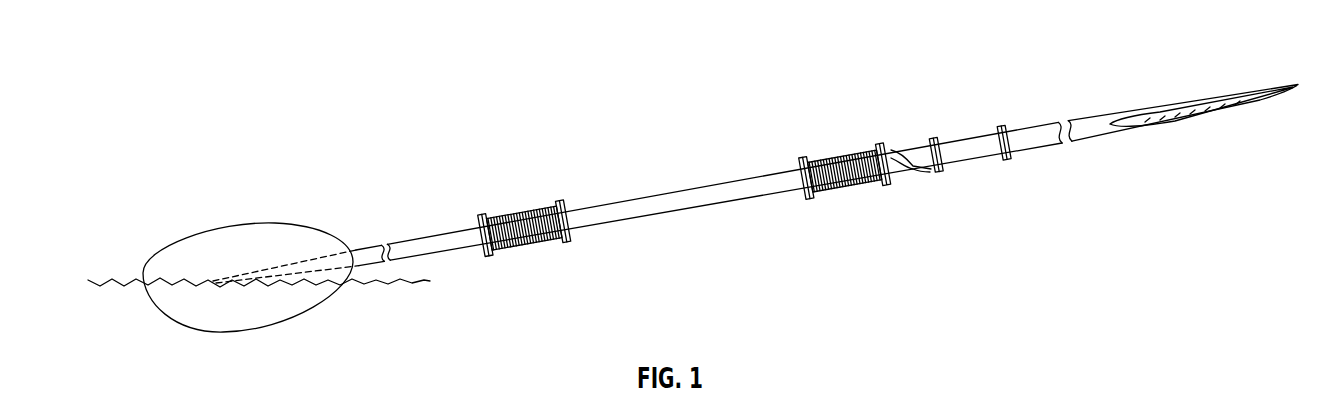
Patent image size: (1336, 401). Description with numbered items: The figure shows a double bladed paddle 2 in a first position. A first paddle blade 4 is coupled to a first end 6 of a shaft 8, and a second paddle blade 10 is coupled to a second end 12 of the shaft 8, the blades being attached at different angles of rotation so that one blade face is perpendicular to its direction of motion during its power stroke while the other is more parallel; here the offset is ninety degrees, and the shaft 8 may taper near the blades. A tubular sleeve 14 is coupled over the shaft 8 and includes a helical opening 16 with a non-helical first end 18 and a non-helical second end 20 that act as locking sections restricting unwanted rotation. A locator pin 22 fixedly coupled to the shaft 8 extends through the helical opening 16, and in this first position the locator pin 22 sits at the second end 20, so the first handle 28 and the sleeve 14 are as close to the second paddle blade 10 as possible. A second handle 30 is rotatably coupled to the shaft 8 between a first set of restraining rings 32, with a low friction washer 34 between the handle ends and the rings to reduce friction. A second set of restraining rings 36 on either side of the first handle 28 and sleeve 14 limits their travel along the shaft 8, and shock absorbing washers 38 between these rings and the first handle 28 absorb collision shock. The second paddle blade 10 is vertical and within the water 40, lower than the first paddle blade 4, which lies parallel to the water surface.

The paddle 2 is at (265, 99).
The first paddle blade 4 is at (1186, 107).
The first end 6 is at (1090, 118).
The shaft 8 is at (683, 196).
The second paddle blade 10 is at (253, 242).
The second end 12 is at (370, 250).
The sleeve 14 is at (923, 145).
The helical opening 16 is at (900, 157).
The first end of the helical opening 18 is at (887, 150).
The second end of the helical opening 20 is at (927, 172).
The locator pin 22 is at (937, 172).
The first handle 28 is at (850, 189).
The second handle 30 is at (525, 212).
The first set of restraining rings 32 is at (478, 222).
The low friction washer 34 is at (493, 254).
The second set of restraining rings 36 is at (797, 167).
The shock absorbing washers 38 is at (807, 158).
The water 40 is at (127, 282).